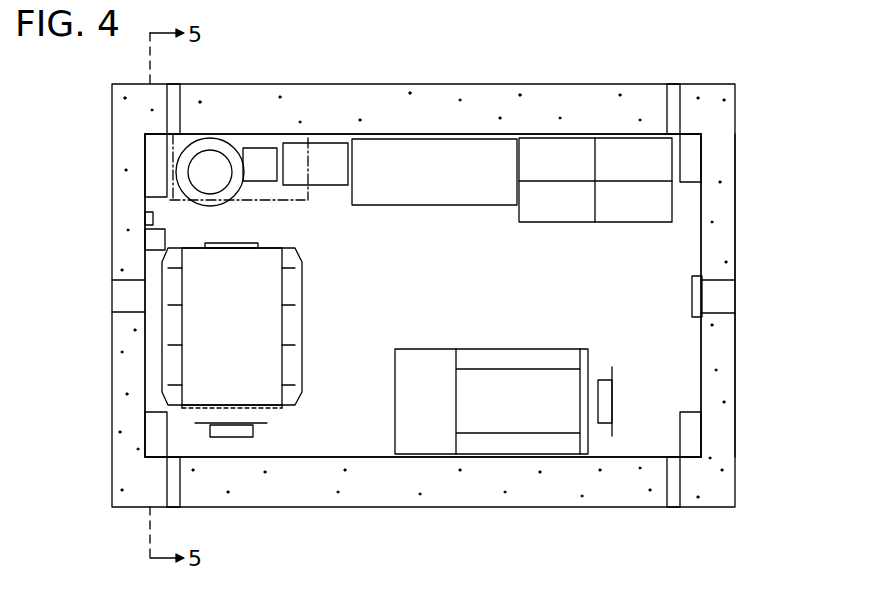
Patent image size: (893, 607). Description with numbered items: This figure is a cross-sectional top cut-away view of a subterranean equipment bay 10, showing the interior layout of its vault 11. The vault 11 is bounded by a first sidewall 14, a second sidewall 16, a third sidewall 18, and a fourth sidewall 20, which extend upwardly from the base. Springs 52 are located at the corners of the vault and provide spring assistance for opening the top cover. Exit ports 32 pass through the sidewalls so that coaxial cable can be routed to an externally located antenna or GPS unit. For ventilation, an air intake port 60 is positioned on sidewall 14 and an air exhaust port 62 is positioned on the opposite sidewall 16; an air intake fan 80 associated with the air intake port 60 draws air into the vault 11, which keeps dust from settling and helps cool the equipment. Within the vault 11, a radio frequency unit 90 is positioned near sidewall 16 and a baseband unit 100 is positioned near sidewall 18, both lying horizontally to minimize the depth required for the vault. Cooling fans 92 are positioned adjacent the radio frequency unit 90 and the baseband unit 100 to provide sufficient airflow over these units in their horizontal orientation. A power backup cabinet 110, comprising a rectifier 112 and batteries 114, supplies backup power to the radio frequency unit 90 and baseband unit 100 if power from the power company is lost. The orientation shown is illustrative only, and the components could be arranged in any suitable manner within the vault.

The subterranean equipment bay 10 is at (768, 130).
The vault 11 is at (736, 380).
The first sidewall 14 is at (737, 180).
The second sidewall 16 is at (422, 507).
The third sidewall 18 is at (112, 428).
The fourth sidewall 20 is at (270, 85).
The exit ports 32 is at (174, 95).
The springs 52 is at (153, 158).
The air intake port 60 is at (740, 292).
The air exhaust port 62 is at (126, 290).
The air intake fan 80 is at (690, 300).
The radio frequency unit 90 is at (392, 373).
The cooling fans 92 is at (252, 430).
The baseband unit 100 is at (300, 320).
The power backup cabinet 110 is at (572, 76).
The rectifier 112 is at (412, 190).
The batteries 114 is at (628, 152).